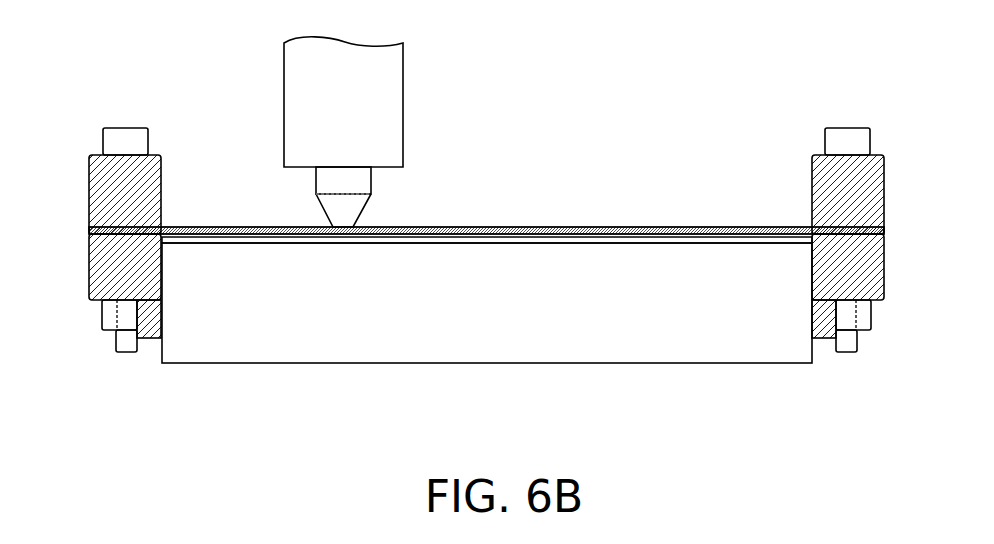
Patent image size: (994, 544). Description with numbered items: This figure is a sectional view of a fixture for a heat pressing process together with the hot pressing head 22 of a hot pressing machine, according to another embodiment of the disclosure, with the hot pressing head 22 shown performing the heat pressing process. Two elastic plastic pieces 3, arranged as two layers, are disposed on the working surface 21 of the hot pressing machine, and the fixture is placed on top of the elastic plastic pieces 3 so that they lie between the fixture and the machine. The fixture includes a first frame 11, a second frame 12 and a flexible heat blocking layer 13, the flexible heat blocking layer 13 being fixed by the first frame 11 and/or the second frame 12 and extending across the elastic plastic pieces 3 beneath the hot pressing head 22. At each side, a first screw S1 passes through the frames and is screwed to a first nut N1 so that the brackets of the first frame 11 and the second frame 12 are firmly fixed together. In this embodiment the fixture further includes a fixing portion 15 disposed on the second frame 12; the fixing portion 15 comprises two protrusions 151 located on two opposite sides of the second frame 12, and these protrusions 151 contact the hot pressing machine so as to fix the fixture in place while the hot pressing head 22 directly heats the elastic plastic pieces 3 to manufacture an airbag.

The elastic plastic pieces 3 is at (568, 238).
The first frame 11 is at (102, 192).
The second frame 12 is at (100, 270).
The flexible heat blocking layer 13 is at (700, 228).
The fixing portion 15 is at (494, 366).
The protrusions 151 is at (148, 330).
The working surface 21 is at (572, 348).
The hot pressing head 22 is at (380, 103).
The first screw S1 is at (124, 138).
The first nut N1 is at (112, 313).